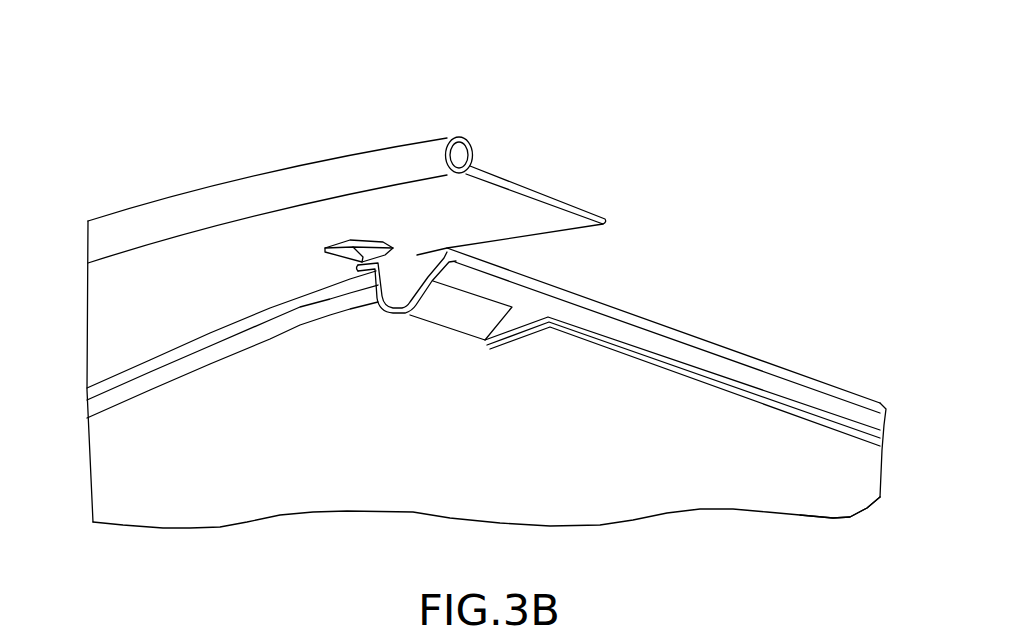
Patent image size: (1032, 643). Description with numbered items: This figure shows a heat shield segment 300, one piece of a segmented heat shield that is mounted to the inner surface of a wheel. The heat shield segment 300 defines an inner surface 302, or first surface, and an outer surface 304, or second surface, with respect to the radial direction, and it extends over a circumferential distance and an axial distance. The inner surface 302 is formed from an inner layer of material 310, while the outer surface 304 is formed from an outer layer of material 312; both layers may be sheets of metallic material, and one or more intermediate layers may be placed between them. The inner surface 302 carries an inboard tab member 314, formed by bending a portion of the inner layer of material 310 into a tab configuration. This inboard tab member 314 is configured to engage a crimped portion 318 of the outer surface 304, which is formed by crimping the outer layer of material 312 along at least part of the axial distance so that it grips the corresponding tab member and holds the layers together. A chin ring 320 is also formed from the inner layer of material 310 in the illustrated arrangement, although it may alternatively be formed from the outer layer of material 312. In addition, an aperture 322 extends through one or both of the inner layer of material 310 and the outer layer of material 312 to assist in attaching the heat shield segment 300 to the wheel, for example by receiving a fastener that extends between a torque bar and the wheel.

The heat shield segment 300 is at (124, 127).
The inner surface 302 is at (215, 483).
The outer surface 304 is at (812, 480).
The inner layer of material 310 is at (117, 497).
The outer layer of material 312 is at (622, 310).
The inboard tab member 314 is at (452, 307).
The crimped portion 318 is at (703, 348).
The chin ring 320 is at (222, 209).
The aperture 322 is at (353, 243).